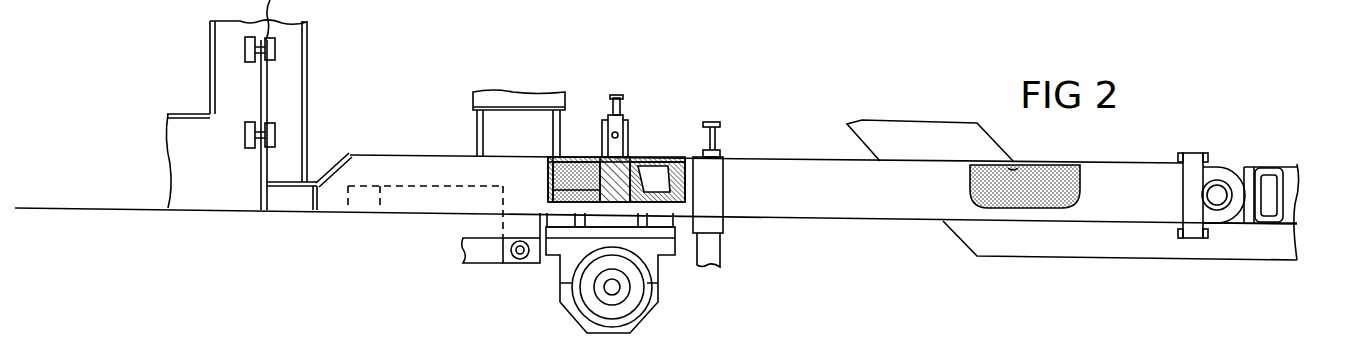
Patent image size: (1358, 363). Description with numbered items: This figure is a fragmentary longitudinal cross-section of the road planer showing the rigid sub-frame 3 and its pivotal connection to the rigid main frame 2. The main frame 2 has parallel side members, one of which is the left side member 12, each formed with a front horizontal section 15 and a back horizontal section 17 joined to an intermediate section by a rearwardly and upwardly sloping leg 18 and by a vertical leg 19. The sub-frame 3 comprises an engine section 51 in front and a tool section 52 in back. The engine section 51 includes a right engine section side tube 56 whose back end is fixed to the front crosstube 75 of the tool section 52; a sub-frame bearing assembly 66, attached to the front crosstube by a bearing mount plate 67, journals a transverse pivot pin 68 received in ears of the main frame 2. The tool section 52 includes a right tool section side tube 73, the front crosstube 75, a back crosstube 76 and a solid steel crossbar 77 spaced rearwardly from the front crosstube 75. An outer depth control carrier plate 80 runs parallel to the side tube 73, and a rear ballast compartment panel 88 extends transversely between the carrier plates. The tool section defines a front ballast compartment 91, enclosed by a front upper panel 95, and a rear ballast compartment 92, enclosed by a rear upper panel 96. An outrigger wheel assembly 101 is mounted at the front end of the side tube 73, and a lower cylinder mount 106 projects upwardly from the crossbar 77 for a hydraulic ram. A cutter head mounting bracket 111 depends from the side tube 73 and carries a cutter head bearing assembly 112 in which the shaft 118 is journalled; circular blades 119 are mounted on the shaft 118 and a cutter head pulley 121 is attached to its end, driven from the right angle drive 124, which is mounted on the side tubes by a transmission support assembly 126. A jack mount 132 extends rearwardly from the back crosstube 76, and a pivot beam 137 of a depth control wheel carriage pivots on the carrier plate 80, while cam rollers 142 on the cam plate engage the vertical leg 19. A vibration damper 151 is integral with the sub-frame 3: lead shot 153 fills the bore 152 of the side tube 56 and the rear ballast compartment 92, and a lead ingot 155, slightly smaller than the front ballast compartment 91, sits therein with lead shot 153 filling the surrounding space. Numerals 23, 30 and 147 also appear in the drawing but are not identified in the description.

The main frame 2 is at (1301, 160).
The sub-frame 3 is at (343, 141).
The left side member 12 is at (977, 257).
The front horizontal section 15 is at (1109, 260).
The back horizontal section 17 is at (190, 210).
The rearwardly and upwardly sloping leg 18 is at (1007, 160).
The vertical leg 19 is at (308, 58).
The cut-off numeral 23 is at (1277, 5).
The upper member 30 is at (406, 0).
The engine section 51 is at (793, 160).
The tool section 52 is at (378, 152).
The right engine section side tube 56 is at (1143, 203).
The sub-frame bearing assembly 66 is at (1198, 155).
The bearing mount plate 67 is at (1190, 153).
The pivot pin 68 is at (1220, 208).
The right tool section side tube 73 is at (406, 180).
The front crosstube 75 is at (685, 151).
The back crosstube 76 is at (383, 193).
The crossbar 77 is at (634, 155).
The outer depth control carrier plate 80 is at (540, 267).
The rear ballast compartment panel 88 is at (572, 157).
The front ballast compartment 91 is at (680, 198).
The rear ballast compartment 92 is at (549, 196).
The front upper panel 95 is at (680, 157).
The rear upper panel 96 is at (588, 157).
The outrigger wheel assembly 101 is at (723, 270).
The lower cylinder mount 106 is at (628, 122).
The cutter head mounting bracket 111 is at (677, 256).
The cutter head bearing assembly 112 is at (578, 322).
The shaft 118 is at (602, 291).
The circular blades 119 is at (765, 5).
The cutter head pulley 121 is at (648, 312).
The right angle drive 124 is at (488, 92).
The transmission support assembly 126 is at (473, 107).
The jack mount 132 is at (283, 183).
The pivot beam 137 is at (462, 263).
The cam rollers 142 is at (248, 122).
The cut-off numeral 147 is at (859, 5).
The vibration damper 151 is at (1063, 160).
The bore 152 is at (1013, 168).
The lead shot 153 is at (549, 178).
The lead ingot 155 is at (687, 170).